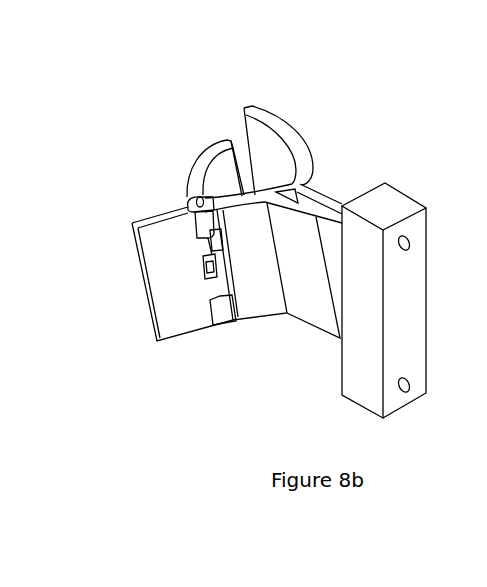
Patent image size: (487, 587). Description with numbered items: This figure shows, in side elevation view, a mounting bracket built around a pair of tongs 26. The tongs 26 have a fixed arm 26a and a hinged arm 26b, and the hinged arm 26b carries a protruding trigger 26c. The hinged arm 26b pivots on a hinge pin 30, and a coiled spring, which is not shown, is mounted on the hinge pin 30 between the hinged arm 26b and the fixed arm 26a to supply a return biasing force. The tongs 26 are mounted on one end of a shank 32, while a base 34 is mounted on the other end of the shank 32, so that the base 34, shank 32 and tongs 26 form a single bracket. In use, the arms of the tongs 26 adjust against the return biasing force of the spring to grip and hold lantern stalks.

The tongs 26 is at (343, 93).
The fixed arm 26a is at (266, 110).
The hinged arm 26b is at (200, 165).
The protruding trigger 26c is at (132, 232).
The hinge pin 30 is at (198, 267).
The shank 32 is at (326, 191).
The base 34 is at (397, 190).